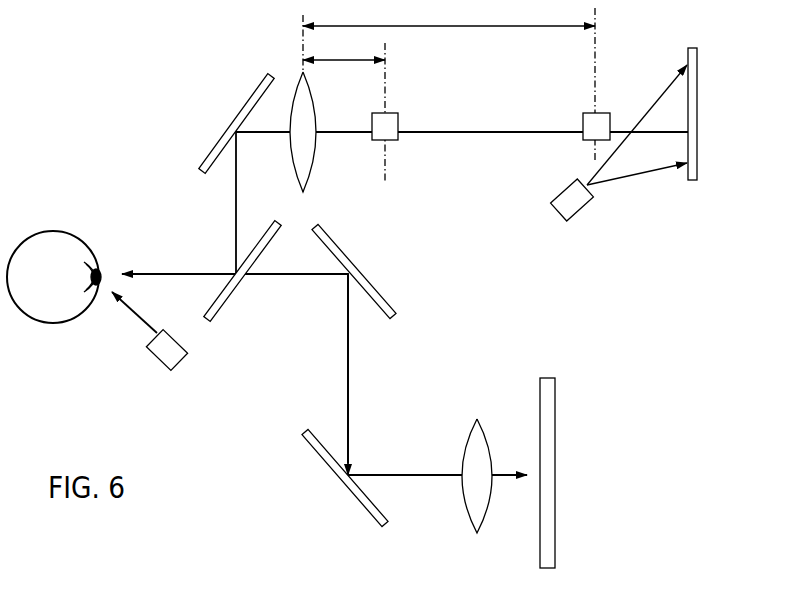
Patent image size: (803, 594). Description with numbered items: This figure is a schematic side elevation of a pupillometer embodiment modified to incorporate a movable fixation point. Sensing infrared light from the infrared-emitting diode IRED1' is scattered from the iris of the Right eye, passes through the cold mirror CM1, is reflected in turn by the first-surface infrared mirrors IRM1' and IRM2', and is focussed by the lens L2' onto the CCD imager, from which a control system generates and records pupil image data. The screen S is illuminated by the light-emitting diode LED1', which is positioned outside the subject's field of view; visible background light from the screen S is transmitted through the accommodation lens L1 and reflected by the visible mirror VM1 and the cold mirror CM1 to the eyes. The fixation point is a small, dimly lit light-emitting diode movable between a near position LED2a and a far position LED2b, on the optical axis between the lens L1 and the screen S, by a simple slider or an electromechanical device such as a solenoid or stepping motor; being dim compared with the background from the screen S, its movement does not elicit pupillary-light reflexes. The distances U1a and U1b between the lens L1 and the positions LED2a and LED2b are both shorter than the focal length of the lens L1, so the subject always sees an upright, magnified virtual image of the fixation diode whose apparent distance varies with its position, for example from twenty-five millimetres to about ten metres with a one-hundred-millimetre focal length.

The visible mirror VM1 is at (232, 124).
The accommodation lens L1 is at (317, 138).
The near fixation point position LED2a is at (420, 114).
The far fixation point position LED2b is at (561, 114).
The screen S is at (691, 102).
The right light-emitting diode LED1' is at (619, 151).
The right eye Right eye is at (54, 260).
The cold mirror CM1 is at (247, 271).
The first-surface infrared mirror IRM1' is at (366, 271).
The infrared-emitting diode IRED1' is at (163, 348).
The first-surface infrared mirror IRM2' is at (331, 477).
The lens L2' is at (479, 462).
The CCD imager CCD is at (550, 458).
The distance between L1 and near fixation point position U1a is at (344, 72).
The distance between L1 and far fixation point position U1b is at (449, 39).